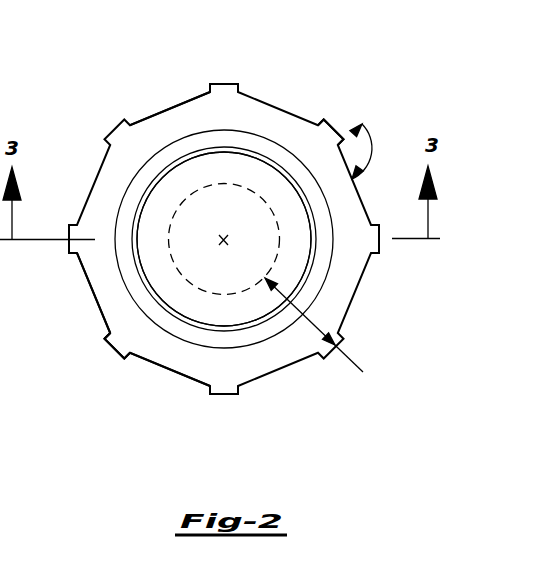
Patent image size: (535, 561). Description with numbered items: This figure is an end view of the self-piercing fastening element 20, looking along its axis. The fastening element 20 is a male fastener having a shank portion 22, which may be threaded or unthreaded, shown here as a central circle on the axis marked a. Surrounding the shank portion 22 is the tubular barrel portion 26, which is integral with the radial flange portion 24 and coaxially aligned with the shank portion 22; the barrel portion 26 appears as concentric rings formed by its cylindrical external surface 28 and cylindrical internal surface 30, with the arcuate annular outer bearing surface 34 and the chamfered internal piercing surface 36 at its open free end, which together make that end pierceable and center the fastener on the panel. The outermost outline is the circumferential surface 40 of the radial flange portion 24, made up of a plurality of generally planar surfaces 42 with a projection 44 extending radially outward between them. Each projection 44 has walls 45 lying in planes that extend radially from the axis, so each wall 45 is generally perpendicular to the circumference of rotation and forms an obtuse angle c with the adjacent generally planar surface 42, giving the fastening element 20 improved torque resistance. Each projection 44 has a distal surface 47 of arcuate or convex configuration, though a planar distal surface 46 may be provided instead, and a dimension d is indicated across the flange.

The fastening element 20 is at (294, 84).
The shank portion 22 is at (172, 223).
The radial flange portion 24 is at (226, 398).
The barrel portion 26 is at (247, 335).
The cylindrical external surface 28 is at (230, 132).
The cylindrical internal surface 30 is at (292, 279).
The arcuate annular outer bearing surface 34 is at (292, 158).
The chamfered internal piercing surface 36 is at (178, 167).
The circumferential surface 40 is at (199, 382).
The generally planar surfaces 42 is at (141, 120).
The projection 44 is at (334, 124).
The wall 45 is at (373, 255).
The planar distal surface 46 is at (114, 356).
The distal surface 47 is at (218, 84).
The center axis a is at (228, 240).
The angle c is at (371, 153).
The dimension d is at (321, 333).